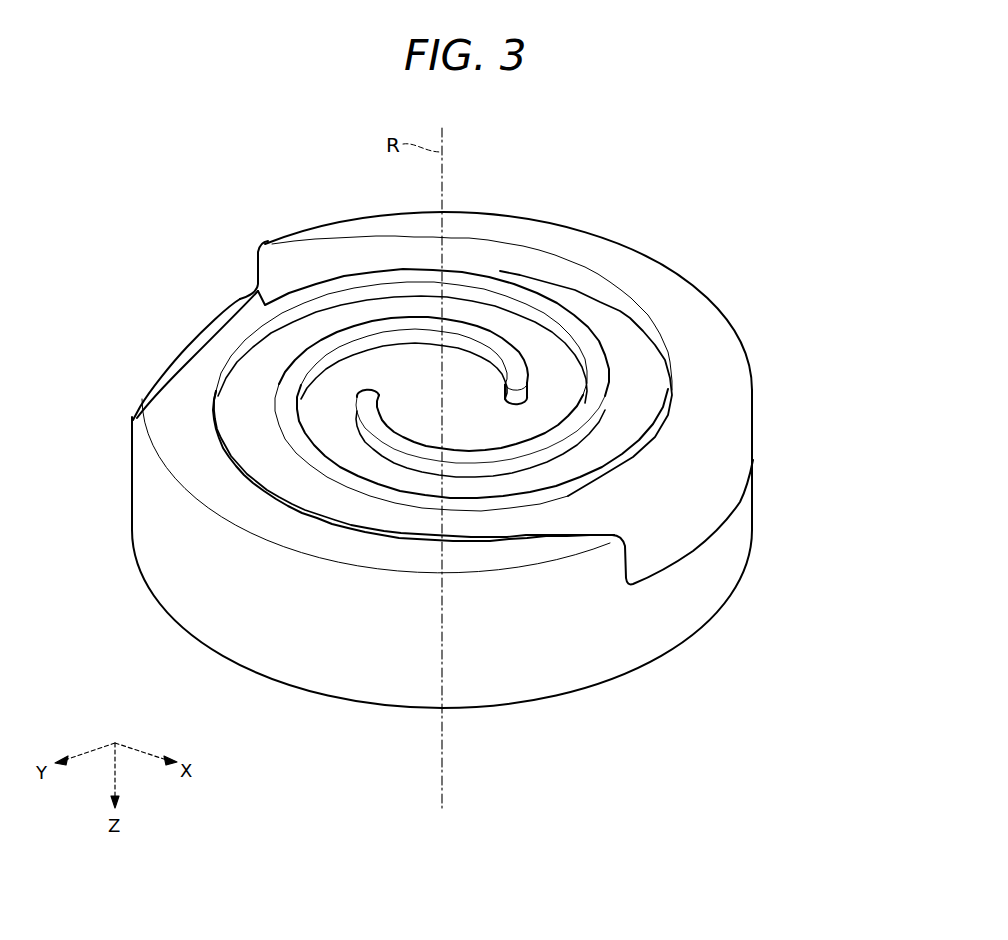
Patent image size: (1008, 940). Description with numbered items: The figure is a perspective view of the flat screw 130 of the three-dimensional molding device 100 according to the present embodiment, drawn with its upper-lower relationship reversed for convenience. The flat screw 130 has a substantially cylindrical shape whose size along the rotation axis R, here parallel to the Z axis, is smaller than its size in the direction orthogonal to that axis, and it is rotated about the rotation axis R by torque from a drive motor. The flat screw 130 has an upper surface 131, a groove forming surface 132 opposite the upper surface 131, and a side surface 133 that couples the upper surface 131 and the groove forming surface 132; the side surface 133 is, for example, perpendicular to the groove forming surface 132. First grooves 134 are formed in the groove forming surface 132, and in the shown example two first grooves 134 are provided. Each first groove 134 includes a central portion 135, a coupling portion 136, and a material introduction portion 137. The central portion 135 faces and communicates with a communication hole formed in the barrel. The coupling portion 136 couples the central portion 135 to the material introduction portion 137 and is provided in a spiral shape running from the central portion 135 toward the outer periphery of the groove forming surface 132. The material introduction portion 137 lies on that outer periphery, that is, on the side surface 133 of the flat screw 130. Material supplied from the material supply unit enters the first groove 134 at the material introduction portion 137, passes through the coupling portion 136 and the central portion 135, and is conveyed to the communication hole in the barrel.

The fluid device 100 is at (814, 131).
The flat screw 130 is at (756, 210).
The upper surface 131 is at (498, 706).
The groove forming surface 132 is at (562, 237).
The side surface 133 is at (198, 569).
The first groove 134 is at (216, 298).
The central portion 135 is at (462, 420).
The coupling portion 136 is at (632, 352).
The material introduction portion 137 is at (682, 533).